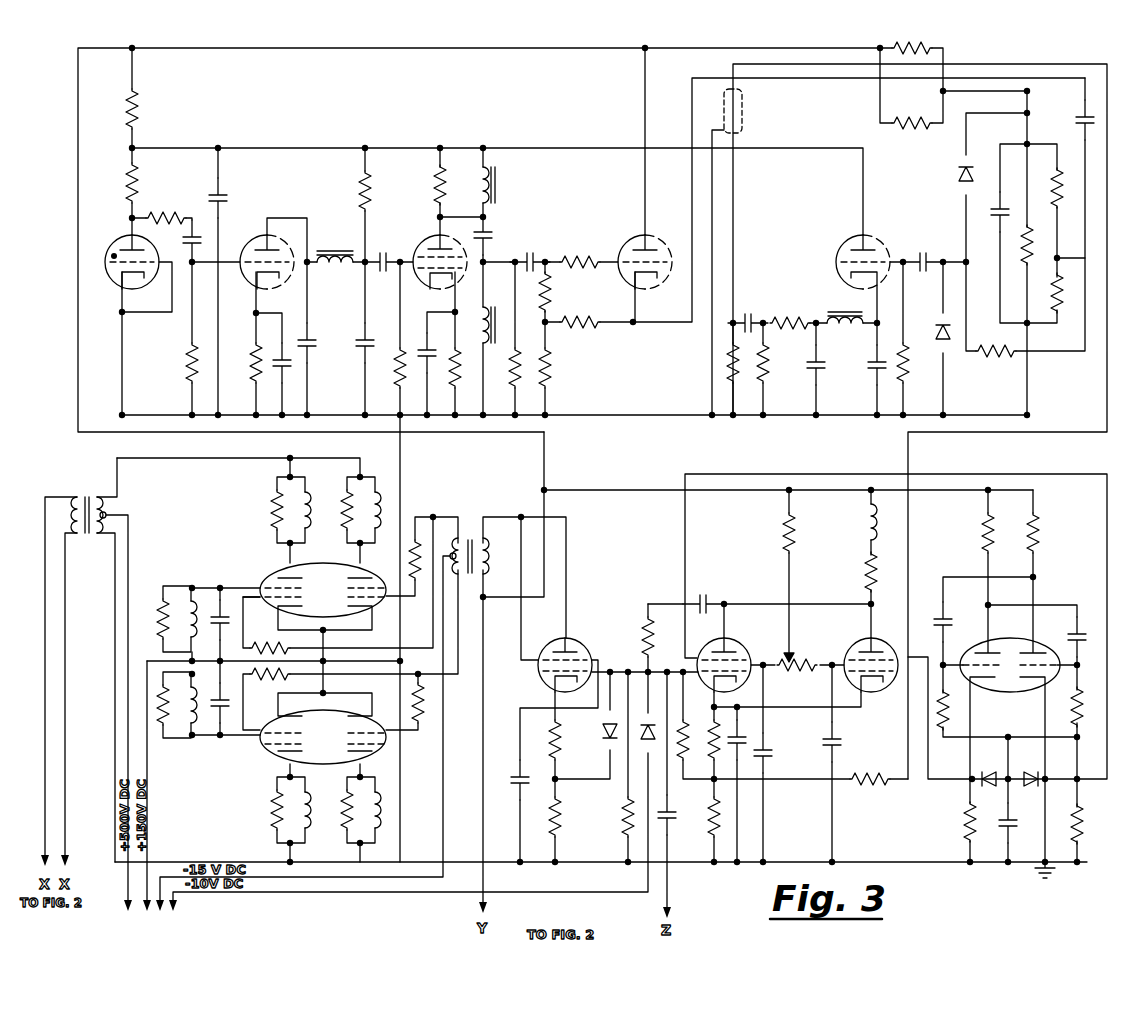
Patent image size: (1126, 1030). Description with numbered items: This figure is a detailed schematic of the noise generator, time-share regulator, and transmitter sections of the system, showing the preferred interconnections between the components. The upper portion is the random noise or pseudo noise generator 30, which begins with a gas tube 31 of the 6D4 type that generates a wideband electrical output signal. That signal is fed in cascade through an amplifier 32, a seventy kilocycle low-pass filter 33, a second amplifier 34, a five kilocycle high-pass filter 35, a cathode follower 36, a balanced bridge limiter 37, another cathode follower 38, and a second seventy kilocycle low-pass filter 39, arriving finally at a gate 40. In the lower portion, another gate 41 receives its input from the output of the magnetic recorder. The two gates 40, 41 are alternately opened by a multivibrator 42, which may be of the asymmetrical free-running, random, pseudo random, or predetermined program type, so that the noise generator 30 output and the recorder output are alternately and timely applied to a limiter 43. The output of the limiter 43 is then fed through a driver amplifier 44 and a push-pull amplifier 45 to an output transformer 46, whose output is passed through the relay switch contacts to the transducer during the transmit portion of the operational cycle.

The random noise or pseudo noise generator 30 is at (59, 156).
The gas tube 31 is at (128, 246).
The amplifier 32 is at (259, 221).
The seventy kilocycle low-pass filter 33 is at (342, 241).
The amplifier 34 is at (414, 246).
The five kilocycle high-pass filter 35 is at (501, 229).
The cathode follower 36 is at (630, 233).
The balanced bridge limiter 37 is at (1041, 135).
The cathode follower 38 is at (840, 243).
The seventy kilocycle low-pass filter 39 is at (776, 300).
The gate 40 is at (845, 641).
The gate 41 is at (753, 646).
The multivibrator 42 is at (1055, 601).
The limiter 43 is at (631, 660).
The driver amplifier 44 is at (596, 639).
The push-pull amplifier 45 is at (257, 564).
The output transformer 46 is at (99, 500).